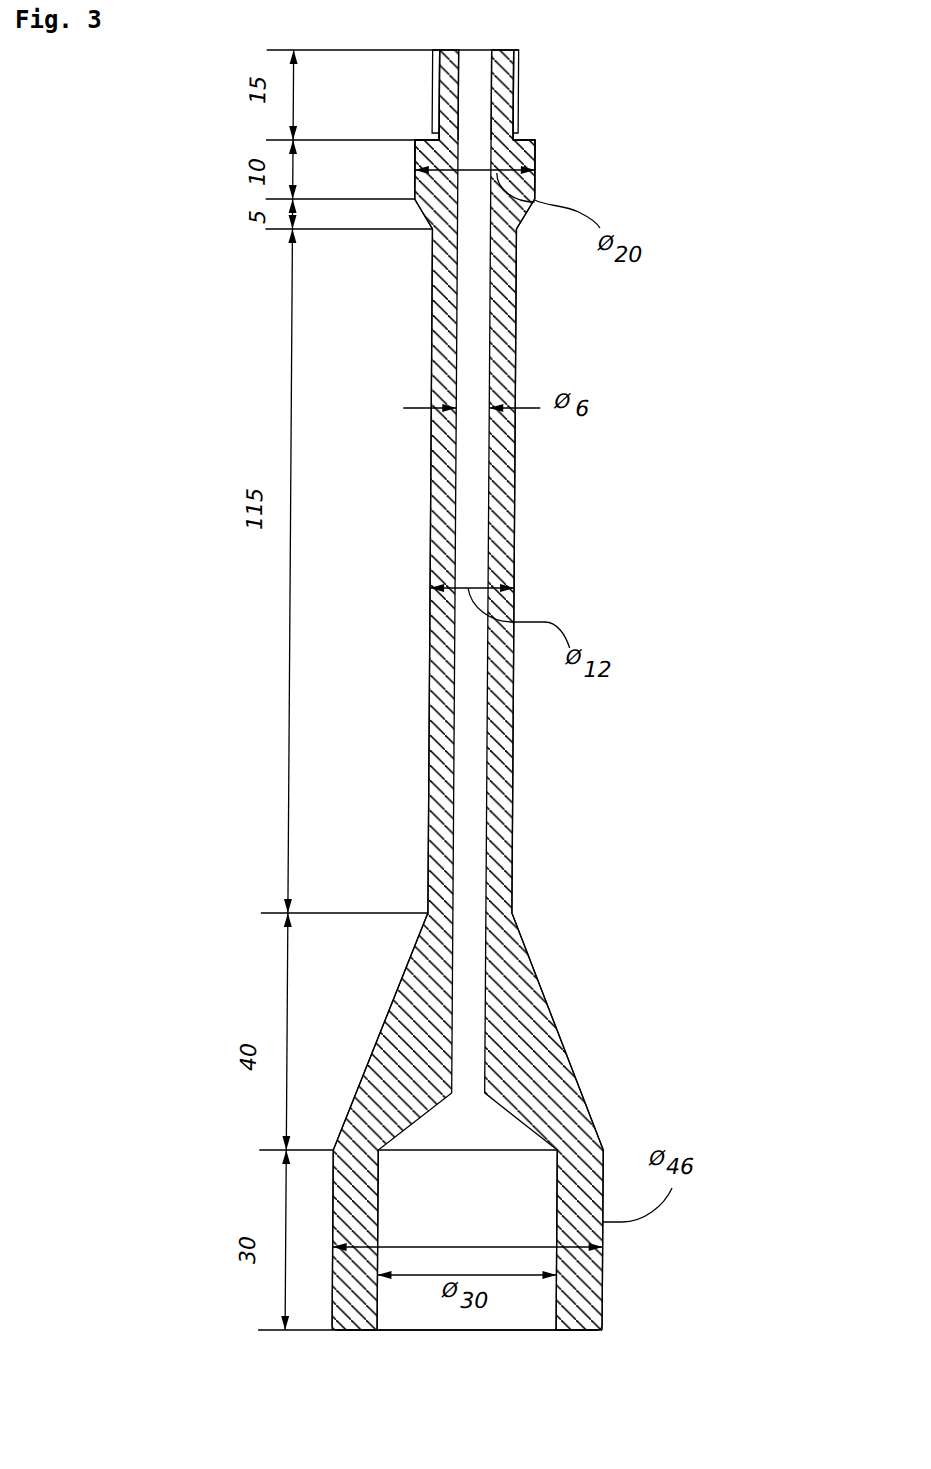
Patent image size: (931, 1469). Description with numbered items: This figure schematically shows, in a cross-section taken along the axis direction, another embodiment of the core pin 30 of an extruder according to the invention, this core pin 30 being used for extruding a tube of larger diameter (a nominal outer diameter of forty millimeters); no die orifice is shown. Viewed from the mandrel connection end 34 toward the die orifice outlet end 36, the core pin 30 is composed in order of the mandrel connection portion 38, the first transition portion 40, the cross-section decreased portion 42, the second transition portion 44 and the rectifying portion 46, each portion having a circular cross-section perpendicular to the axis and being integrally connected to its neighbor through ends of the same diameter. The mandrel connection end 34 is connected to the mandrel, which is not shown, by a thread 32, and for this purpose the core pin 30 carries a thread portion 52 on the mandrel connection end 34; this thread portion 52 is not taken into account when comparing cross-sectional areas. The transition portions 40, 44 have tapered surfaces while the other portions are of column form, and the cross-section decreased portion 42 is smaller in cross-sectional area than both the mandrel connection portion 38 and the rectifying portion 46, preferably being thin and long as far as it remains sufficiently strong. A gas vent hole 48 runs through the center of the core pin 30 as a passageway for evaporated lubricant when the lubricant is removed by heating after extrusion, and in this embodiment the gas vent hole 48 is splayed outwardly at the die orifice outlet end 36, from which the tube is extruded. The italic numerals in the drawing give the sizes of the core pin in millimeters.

The core pin 30 is at (587, 563).
The thread 32 is at (519, 83).
The mandrel connection end 34 is at (521, 138).
The die orifice outlet end 36 is at (611, 1307).
The mandrel connection portion 38 is at (222, 141).
The first transition portion 40 is at (222, 200).
The cross-section decreased portion 42 is at (222, 911).
The second transition portion 44 is at (222, 914).
The rectifying portion 46 is at (222, 1151).
The gas vent hole 48 is at (480, 1182).
The thread portion 52 is at (222, 47).